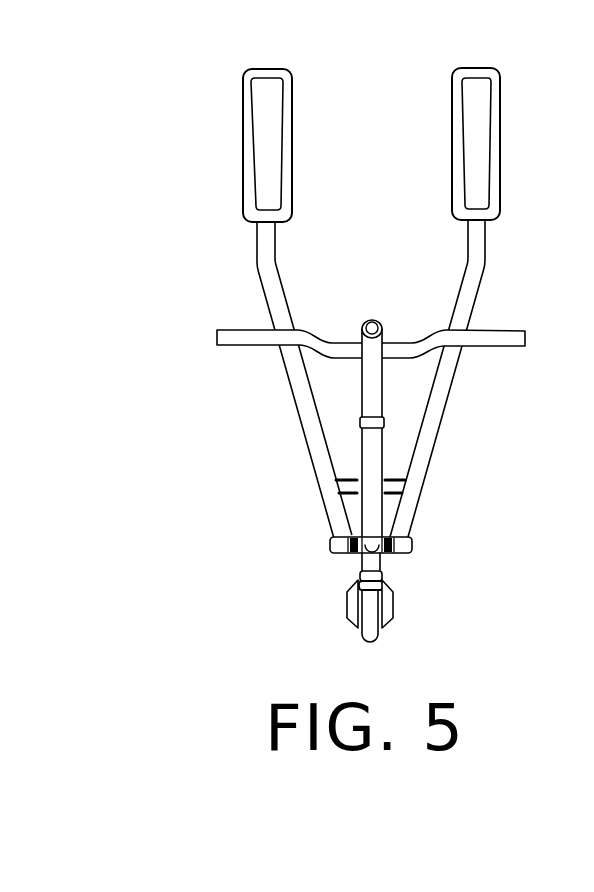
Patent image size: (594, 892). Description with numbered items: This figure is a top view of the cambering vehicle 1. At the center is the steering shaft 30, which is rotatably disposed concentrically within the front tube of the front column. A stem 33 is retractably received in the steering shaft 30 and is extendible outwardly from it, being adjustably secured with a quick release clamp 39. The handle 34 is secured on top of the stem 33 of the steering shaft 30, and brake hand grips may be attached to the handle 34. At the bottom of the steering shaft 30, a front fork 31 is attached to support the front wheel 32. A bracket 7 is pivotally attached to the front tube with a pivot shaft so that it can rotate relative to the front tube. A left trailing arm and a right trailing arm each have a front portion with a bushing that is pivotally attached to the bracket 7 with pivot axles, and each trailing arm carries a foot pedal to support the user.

The cambering vehicle 1 is at (186, 191).
The bracket 7 is at (348, 556).
The steering shaft 30 is at (373, 460).
The front fork 31 is at (389, 603).
The front wheel 32 is at (371, 635).
The stem 33 is at (373, 383).
The handle 34 is at (512, 330).
The quick release clamp 39 is at (384, 430).